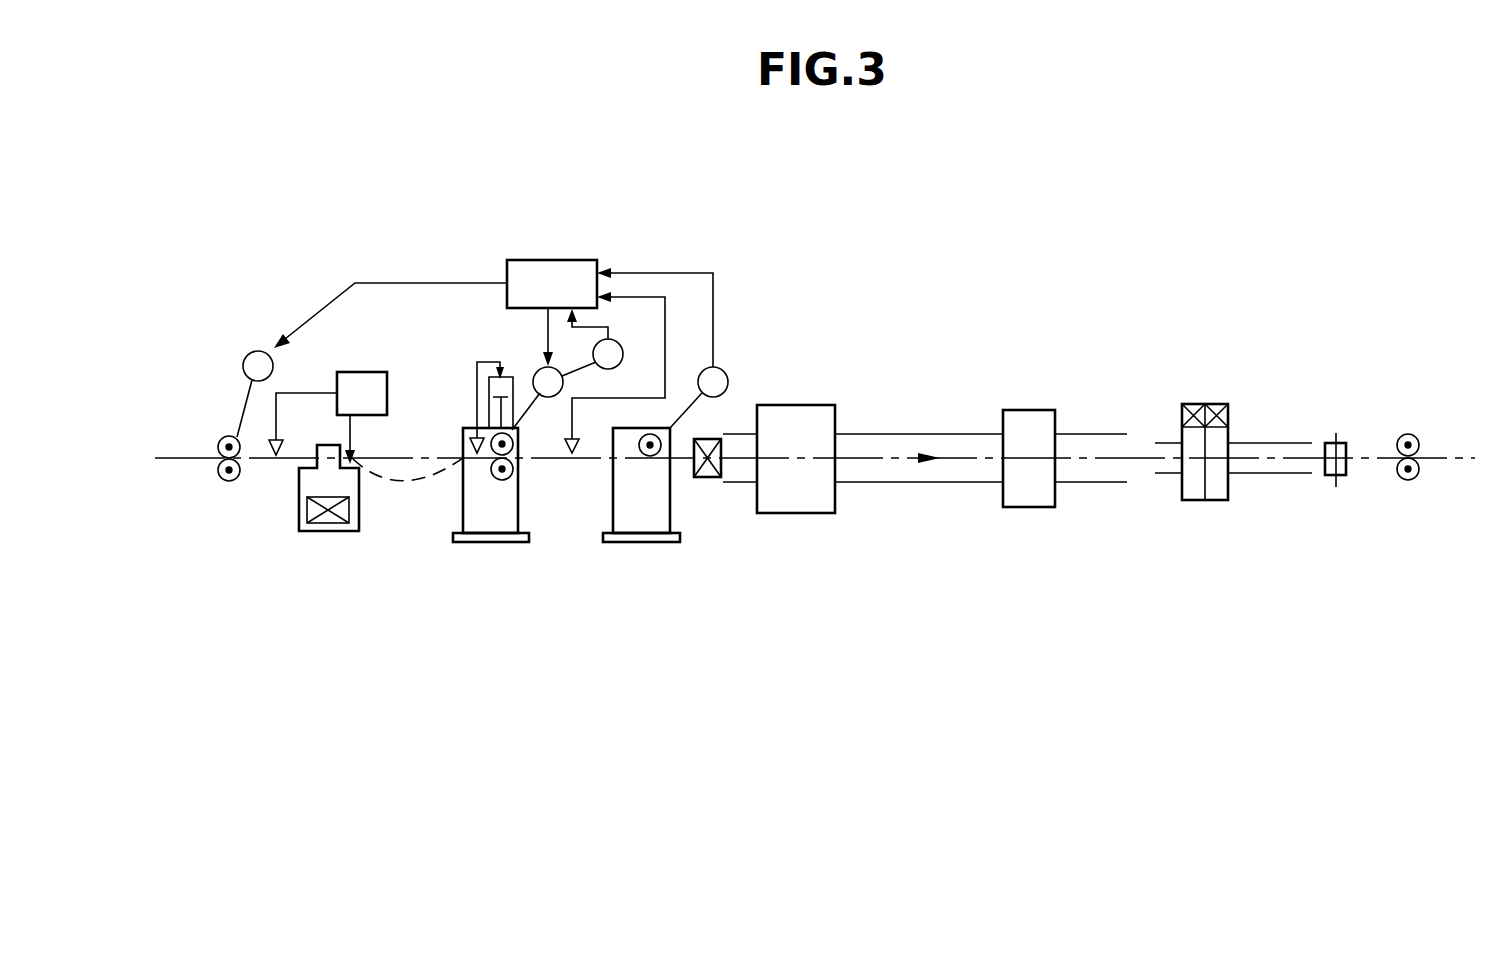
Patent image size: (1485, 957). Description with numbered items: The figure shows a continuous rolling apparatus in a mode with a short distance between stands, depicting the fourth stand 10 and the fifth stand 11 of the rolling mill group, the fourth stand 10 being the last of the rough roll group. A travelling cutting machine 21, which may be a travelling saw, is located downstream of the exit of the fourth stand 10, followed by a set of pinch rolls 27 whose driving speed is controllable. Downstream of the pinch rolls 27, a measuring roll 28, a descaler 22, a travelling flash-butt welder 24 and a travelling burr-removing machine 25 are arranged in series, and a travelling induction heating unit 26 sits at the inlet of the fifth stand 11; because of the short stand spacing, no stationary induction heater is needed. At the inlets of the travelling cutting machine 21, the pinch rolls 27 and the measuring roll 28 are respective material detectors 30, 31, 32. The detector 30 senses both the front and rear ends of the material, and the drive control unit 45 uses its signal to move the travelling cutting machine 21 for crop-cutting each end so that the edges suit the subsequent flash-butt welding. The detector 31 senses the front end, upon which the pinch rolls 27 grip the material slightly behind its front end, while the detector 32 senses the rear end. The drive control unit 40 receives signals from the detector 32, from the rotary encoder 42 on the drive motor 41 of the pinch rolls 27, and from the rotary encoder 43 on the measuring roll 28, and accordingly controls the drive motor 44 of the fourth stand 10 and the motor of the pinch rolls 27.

The fourth stand 10 is at (224, 438).
The fifth stand 11 is at (1330, 477).
The travelling cutting machine 21 is at (325, 533).
The descaler 22 is at (710, 439).
The travelling flash-butt welder 24 is at (813, 404).
The travelling burr-removing machine 25 is at (1035, 408).
The travelling induction heating unit 26 is at (1188, 403).
The pinch rolls 27 is at (502, 543).
The measuring roll 28 is at (658, 543).
The material detector 30 is at (267, 462).
The material detector 31 is at (468, 428).
The material detector 32 is at (568, 461).
The drive control unit 40 is at (565, 258).
The drive motor 41 is at (548, 397).
The rotary encoder 42 is at (620, 346).
The rotary encoder 43 is at (724, 371).
The drive motor 44 is at (257, 351).
The drive control unit 45 is at (372, 372).